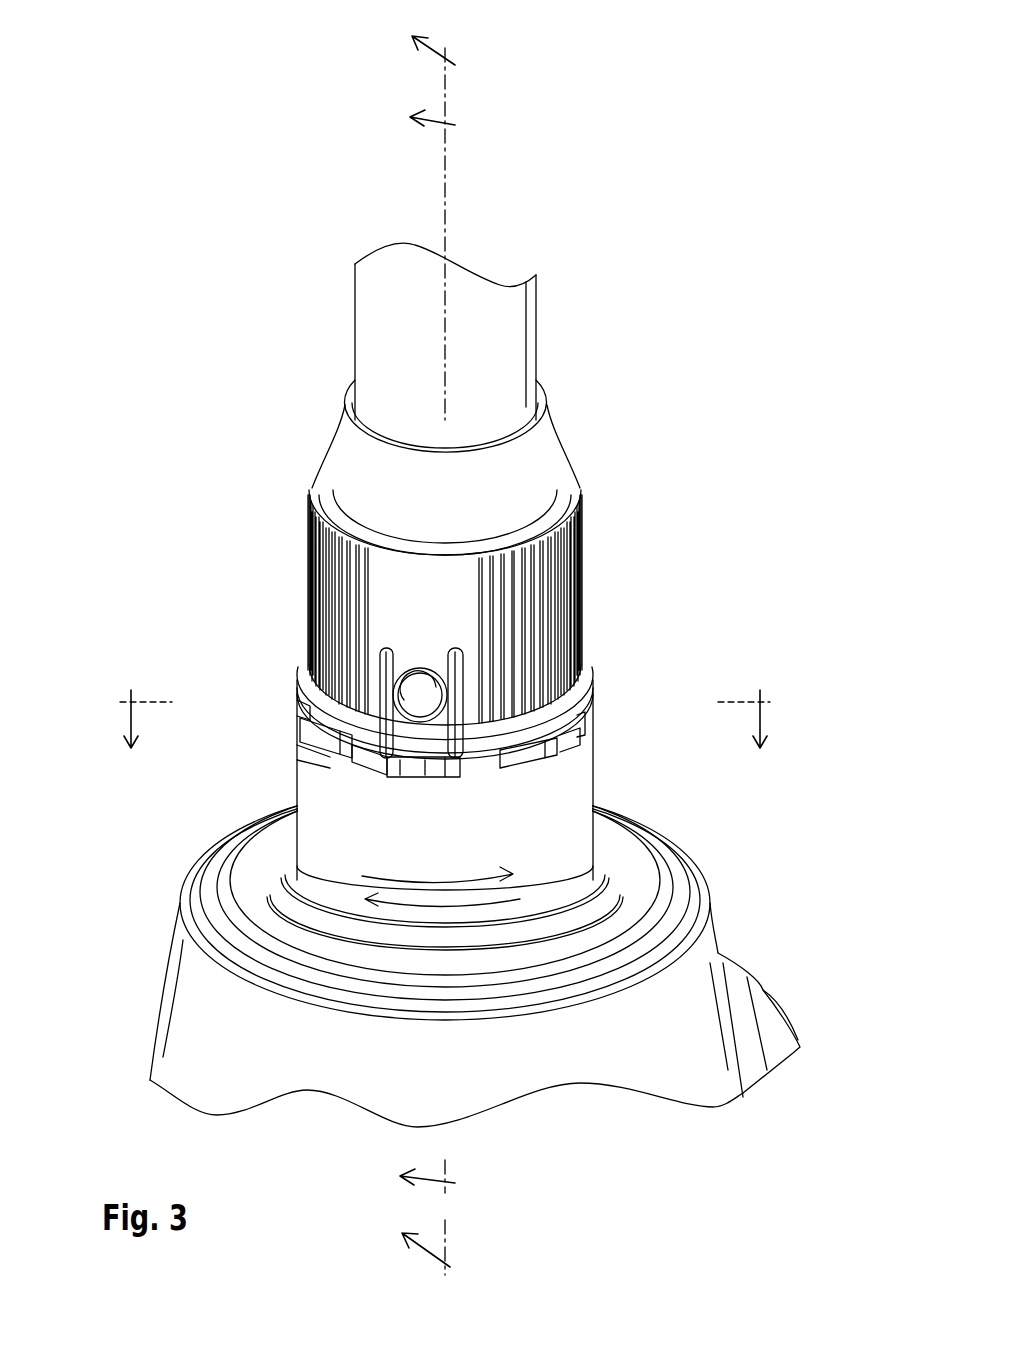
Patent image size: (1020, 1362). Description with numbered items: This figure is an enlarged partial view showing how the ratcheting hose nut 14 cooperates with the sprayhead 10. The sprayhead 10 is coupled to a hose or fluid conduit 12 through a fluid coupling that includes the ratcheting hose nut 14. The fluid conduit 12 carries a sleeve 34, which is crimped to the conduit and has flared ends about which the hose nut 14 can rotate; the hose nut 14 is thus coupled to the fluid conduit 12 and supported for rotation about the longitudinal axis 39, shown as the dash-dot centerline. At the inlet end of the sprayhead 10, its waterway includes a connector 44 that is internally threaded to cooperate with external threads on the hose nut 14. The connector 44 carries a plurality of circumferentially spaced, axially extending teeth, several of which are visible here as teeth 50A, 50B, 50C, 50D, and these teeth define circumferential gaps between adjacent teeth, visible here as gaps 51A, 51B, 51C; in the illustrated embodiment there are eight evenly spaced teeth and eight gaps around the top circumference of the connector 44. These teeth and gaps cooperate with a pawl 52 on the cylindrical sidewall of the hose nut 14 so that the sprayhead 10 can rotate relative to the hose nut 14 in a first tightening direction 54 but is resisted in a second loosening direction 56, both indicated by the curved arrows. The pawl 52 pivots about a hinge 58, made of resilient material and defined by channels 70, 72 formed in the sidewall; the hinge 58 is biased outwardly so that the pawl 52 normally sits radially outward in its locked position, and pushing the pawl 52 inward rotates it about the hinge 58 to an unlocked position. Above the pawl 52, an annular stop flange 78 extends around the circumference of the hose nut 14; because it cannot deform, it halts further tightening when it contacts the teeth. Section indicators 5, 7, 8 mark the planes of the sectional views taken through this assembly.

The sprayhead 10 is at (165, 990).
The fluid conduit 12 is at (540, 330).
The ratcheting hose nut 14 is at (590, 560).
The sleeve 34 is at (332, 432).
The longitudinal axis 39 is at (450, 205).
The connector 44 is at (575, 848).
The tooth 50A is at (595, 740).
The tooth 50B is at (560, 800).
The tooth 50C is at (322, 786).
The tooth 50D is at (300, 715).
The gap 51A is at (560, 757).
The gap 51B is at (300, 808).
The gap 51C is at (322, 756).
The pawl 52 is at (418, 778).
The first tightening direction 54 is at (300, 880).
The second loosening direction 56 is at (432, 907).
The hinge 58 is at (418, 658).
The channel 70 is at (380, 662).
The channel 72 is at (470, 678).
The annular stop flange 78 is at (595, 690).
The section line 5- 5 is at (445, 733).
The section line 7- 7 is at (415, 647).
The section line 8- 8 is at (417, 643).